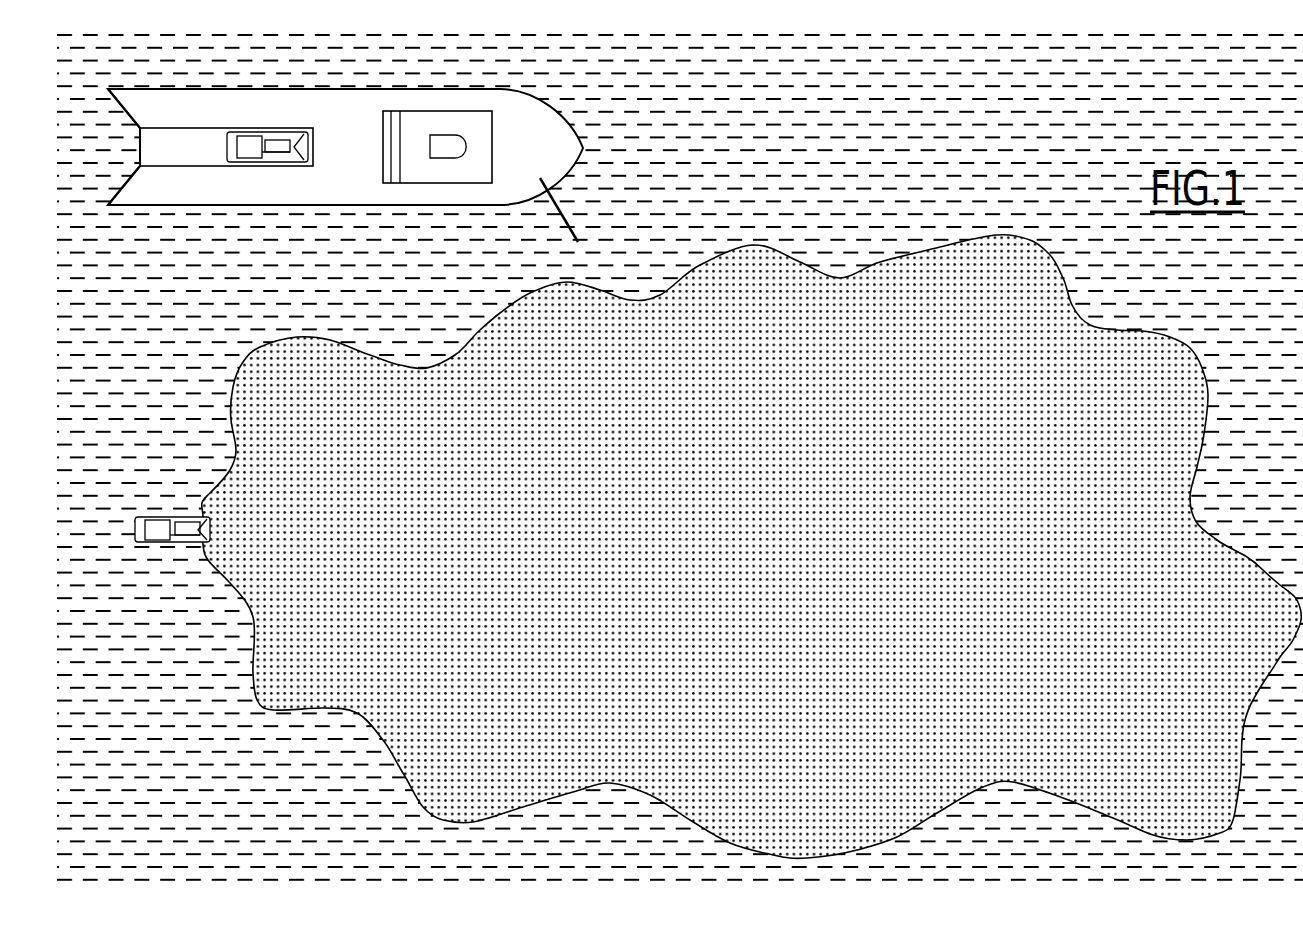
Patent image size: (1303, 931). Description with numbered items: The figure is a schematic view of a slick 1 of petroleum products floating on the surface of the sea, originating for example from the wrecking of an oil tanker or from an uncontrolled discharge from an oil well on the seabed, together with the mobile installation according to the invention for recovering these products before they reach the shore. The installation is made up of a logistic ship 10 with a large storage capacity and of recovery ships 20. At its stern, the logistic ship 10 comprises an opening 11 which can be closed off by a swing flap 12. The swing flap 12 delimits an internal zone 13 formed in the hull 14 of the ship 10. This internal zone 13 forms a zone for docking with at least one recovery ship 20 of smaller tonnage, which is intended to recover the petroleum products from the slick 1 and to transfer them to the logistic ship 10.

The slick 1 is at (873, 280).
The logistic ship 10 is at (415, 213).
The opening 11 is at (140, 161).
The swing flap 12 is at (140, 138).
The internal zone 13 is at (183, 158).
The hull 14 is at (297, 188).
The recovery ship 20 is at (278, 130).